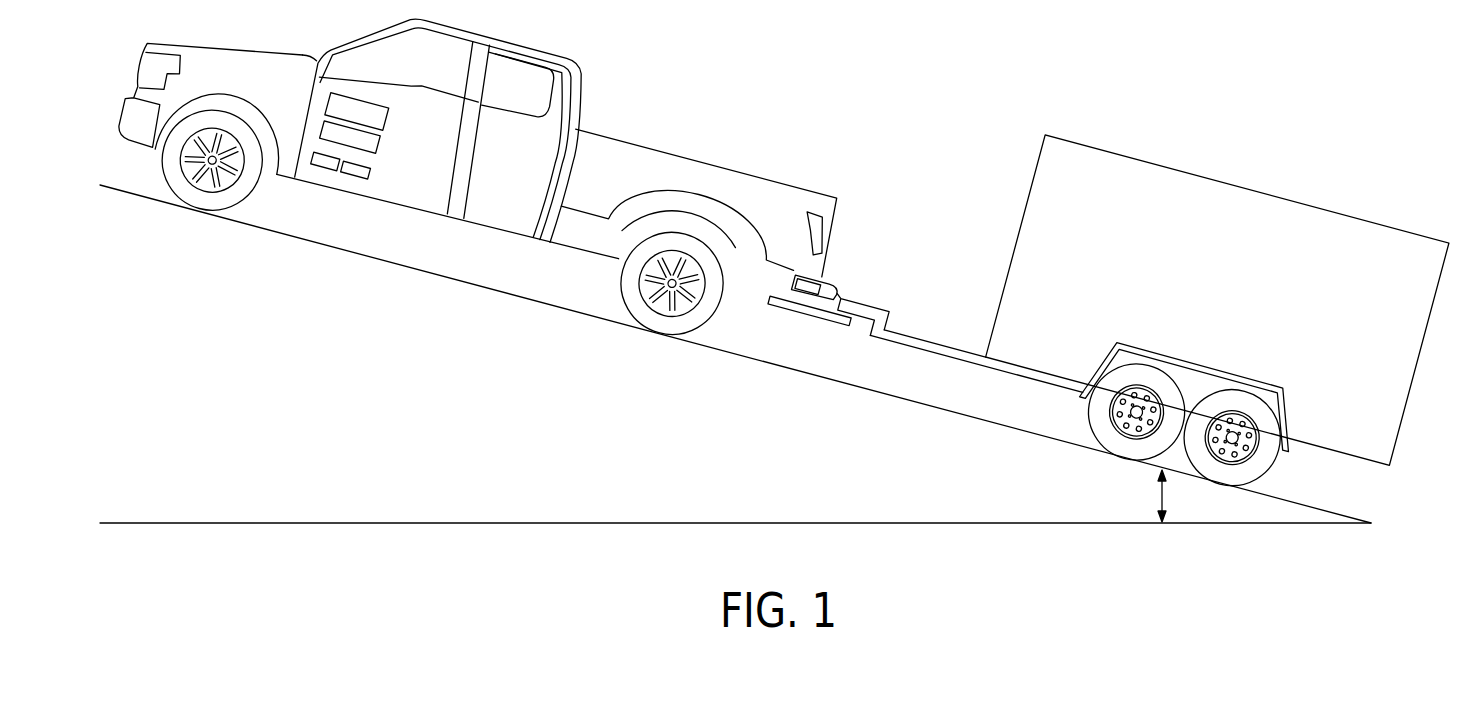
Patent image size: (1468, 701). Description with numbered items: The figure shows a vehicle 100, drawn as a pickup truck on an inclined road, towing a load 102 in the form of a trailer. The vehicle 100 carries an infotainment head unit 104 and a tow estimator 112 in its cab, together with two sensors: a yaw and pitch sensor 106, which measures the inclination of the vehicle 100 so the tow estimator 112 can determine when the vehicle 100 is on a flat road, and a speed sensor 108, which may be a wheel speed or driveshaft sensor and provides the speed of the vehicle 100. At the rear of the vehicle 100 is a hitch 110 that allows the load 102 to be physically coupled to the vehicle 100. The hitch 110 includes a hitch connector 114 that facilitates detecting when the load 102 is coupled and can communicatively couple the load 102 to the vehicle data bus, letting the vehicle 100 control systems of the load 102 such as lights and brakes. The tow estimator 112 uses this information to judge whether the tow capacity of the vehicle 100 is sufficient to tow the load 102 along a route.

The vehicle 100 is at (837, 198).
The load 102 is at (1290, 200).
The infotainment head unit 104 is at (386, 119).
The yaw and pitch sensor 106 is at (354, 176).
The speed sensor 108 is at (322, 170).
The hitch 110 is at (843, 296).
The tow estimator 112 is at (378, 146).
The hitch connector 114 is at (807, 295).